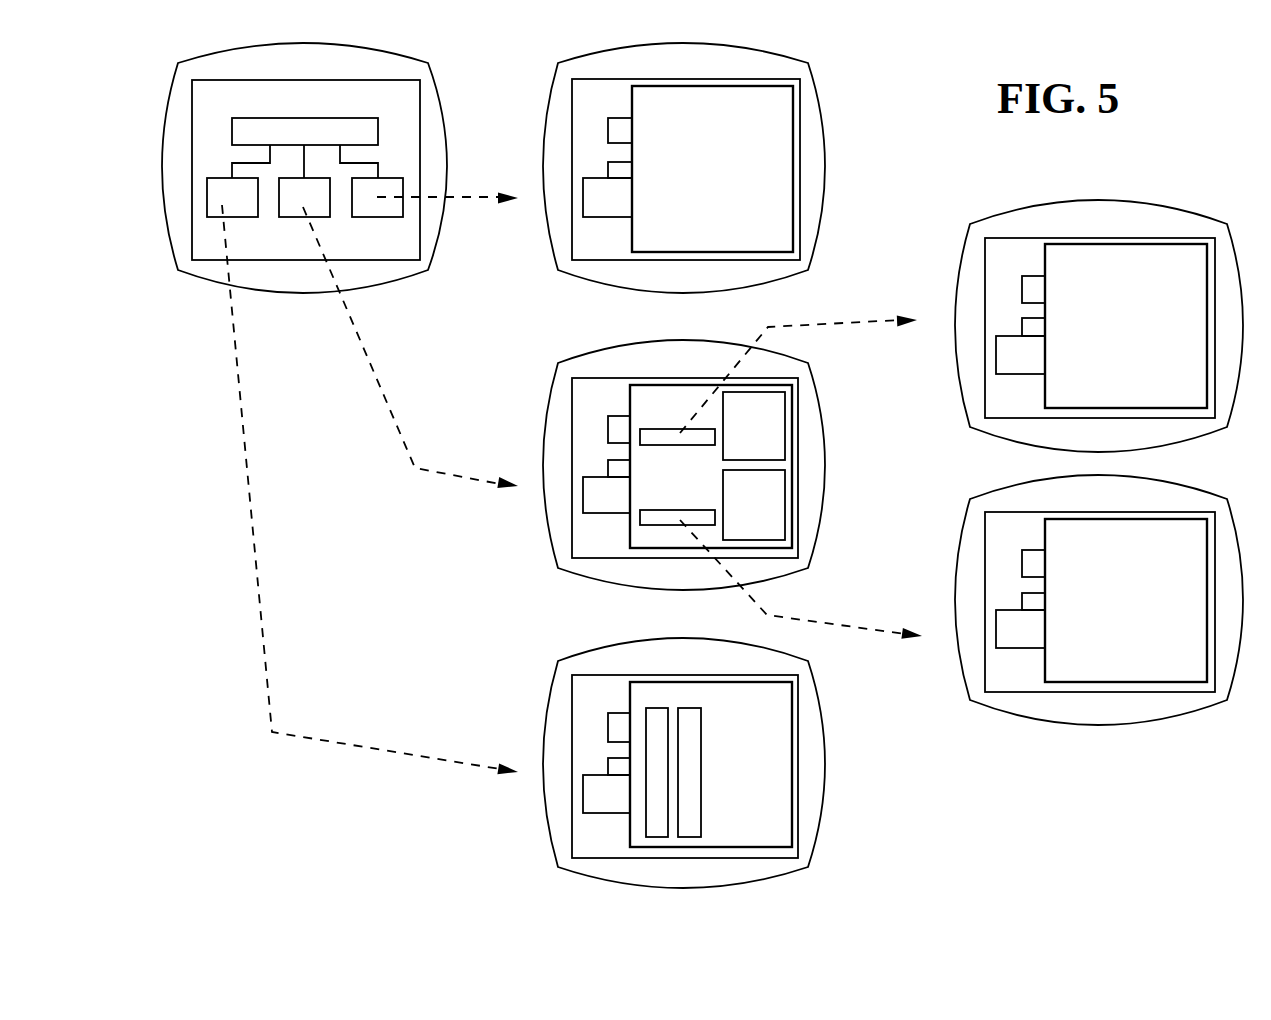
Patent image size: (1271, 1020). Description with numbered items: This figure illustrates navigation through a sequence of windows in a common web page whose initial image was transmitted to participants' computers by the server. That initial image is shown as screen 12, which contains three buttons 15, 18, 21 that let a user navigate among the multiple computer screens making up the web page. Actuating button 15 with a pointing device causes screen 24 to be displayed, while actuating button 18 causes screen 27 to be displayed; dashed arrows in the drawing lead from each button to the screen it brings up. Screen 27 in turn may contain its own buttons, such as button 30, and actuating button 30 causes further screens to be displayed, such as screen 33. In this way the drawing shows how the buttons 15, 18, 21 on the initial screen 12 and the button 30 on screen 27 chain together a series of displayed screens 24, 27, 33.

The screen 12 is at (168, 100).
The button 15 is at (213, 197).
The button 18 is at (290, 220).
The button 21 is at (370, 218).
The screen 24 is at (826, 762).
The screen 27 is at (826, 464).
The button 30 is at (697, 447).
The screen 33 is at (1175, 210).